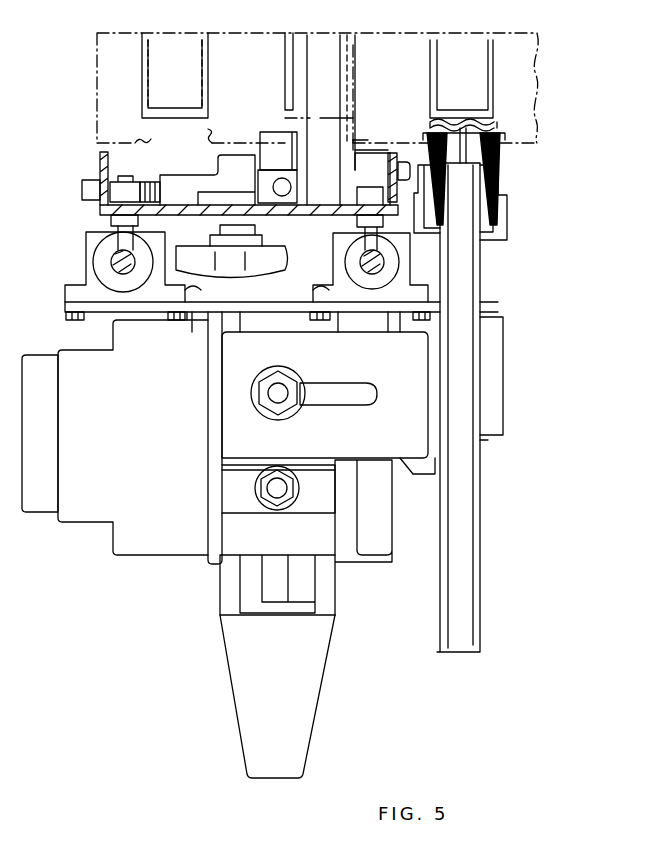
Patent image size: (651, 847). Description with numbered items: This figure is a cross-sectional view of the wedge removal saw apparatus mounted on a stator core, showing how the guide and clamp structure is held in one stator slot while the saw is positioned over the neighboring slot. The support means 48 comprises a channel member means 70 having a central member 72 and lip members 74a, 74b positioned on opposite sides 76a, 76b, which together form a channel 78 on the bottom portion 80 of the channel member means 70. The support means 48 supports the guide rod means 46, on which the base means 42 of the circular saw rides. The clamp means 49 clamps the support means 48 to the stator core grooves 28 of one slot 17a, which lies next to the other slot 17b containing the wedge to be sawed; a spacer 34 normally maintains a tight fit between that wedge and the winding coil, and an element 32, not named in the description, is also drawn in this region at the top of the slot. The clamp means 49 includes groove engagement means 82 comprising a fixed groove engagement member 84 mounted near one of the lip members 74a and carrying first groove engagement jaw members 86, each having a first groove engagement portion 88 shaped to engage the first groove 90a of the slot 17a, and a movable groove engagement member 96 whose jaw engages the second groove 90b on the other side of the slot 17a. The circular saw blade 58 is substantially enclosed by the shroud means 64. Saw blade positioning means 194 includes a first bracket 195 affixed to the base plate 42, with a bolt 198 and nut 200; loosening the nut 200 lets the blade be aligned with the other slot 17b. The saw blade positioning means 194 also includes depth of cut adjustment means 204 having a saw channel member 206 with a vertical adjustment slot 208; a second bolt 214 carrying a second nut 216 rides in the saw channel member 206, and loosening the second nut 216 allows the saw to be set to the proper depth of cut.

The slot 17a is at (326, 40).
The slot 17b is at (470, 117).
The groove 28 is at (138, 135).
The brush holder stem 32 is at (488, 145).
The spacer 34 is at (500, 124).
The base means 42 is at (418, 312).
The guide rod means 46 is at (116, 260).
The support means 48 is at (100, 152).
The clamp means 49 is at (252, 254).
The circular saw blade 58 is at (472, 162).
The shroud means 64 is at (462, 646).
The channel member means 70 is at (104, 208).
The central member 72 is at (316, 216).
The lip member 74a is at (380, 192).
The lip member 74b is at (100, 176).
The side of channel member means 76a is at (385, 206).
The side of channel member means 76b is at (111, 215).
The channel 78 is at (311, 168).
The bottom portion 80 is at (310, 200).
The groove engagement means 82 is at (372, 160).
The fixed groove engagement member 84 is at (356, 138).
The first groove engagement jaw member 86 is at (358, 138).
The first groove engagement portion 88 is at (360, 142).
The first groove 90a is at (362, 136).
The second groove 90b is at (285, 140).
The movable groove engagement member 96 is at (285, 136).
The saw blade positioning means 194 is at (233, 532).
The first bracket 195 is at (233, 414).
The bolt 198 is at (278, 392).
The nut 200 is at (290, 410).
The depth of cut adjustment means 204 is at (388, 594).
The saw channel member 206 is at (250, 578).
The vertical adjustment slot 208 is at (273, 588).
The second bolt 214 is at (266, 490).
The second nut 216 is at (295, 494).